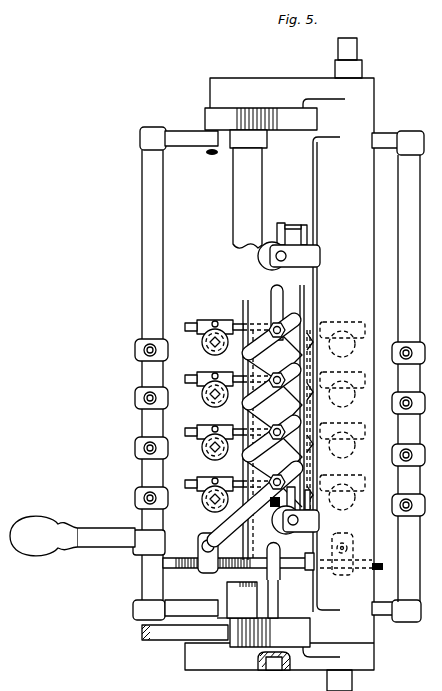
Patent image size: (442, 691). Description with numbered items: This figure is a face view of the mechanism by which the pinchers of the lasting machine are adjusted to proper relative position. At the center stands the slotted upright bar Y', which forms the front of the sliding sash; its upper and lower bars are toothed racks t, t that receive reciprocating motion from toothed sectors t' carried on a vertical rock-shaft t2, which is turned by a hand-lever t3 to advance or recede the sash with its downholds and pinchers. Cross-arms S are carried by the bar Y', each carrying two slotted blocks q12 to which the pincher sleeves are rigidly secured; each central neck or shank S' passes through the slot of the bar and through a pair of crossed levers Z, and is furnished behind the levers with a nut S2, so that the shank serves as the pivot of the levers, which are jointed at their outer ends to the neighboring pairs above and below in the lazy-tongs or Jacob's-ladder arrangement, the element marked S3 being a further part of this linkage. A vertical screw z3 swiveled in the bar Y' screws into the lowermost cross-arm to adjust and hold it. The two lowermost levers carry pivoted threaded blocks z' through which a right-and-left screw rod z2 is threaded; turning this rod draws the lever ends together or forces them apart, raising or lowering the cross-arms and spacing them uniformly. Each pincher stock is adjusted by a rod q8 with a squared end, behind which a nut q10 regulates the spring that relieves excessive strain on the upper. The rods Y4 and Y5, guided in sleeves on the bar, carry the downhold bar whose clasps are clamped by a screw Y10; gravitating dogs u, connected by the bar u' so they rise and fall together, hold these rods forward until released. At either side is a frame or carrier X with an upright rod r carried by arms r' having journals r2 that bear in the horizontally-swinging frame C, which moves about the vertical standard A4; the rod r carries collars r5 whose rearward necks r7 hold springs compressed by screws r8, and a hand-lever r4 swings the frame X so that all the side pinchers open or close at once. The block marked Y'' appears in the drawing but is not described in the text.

The toothed racks t is at (261, 377).
The toothed sectors t' is at (256, 379).
The vertical rock-shaft t2 is at (235, 597).
The hand-lever t3 is at (158, 632).
The upright cylindrical rod r is at (281, 376).
The arms r' is at (278, 374).
The journals r2 is at (207, 160).
The hand-lever r4 is at (87, 533).
The collars or hubs r5 is at (140, 349).
The rearwardly-extending neck r7 is at (157, 355).
The screw r8 is at (157, 351).
The frame or carrier X is at (171, 197).
The slotted upright bar Y' is at (273, 358).
The clamping block Y'' is at (289, 388).
The rod or stem Y4 is at (270, 256).
The lower rod Y5 is at (284, 519).
The screw Y10 is at (265, 312).
The vertical post or standard A4 is at (325, 223).
The gravitating dog u is at (298, 356).
The connecting rod or bar u' is at (336, 404).
The horizontally-swinging frame C is at (196, 303).
The rod q8 is at (205, 432).
The nut q10 is at (209, 420).
The slotted block q12 is at (213, 322).
The cross-arm S is at (260, 393).
The central neck or shank S' is at (275, 396).
The nut S2 is at (256, 422).
The link S3 is at (260, 444).
The crossed levers Z is at (272, 418).
The threaded blocks or nuts z' is at (265, 554).
The screw rod or stem z2 is at (288, 558).
The vertical screw z3 is at (279, 586).